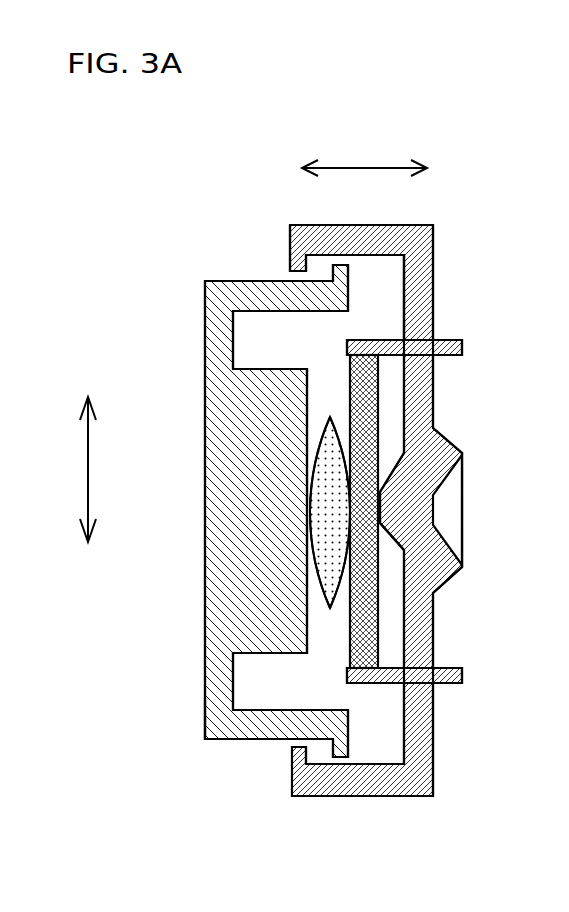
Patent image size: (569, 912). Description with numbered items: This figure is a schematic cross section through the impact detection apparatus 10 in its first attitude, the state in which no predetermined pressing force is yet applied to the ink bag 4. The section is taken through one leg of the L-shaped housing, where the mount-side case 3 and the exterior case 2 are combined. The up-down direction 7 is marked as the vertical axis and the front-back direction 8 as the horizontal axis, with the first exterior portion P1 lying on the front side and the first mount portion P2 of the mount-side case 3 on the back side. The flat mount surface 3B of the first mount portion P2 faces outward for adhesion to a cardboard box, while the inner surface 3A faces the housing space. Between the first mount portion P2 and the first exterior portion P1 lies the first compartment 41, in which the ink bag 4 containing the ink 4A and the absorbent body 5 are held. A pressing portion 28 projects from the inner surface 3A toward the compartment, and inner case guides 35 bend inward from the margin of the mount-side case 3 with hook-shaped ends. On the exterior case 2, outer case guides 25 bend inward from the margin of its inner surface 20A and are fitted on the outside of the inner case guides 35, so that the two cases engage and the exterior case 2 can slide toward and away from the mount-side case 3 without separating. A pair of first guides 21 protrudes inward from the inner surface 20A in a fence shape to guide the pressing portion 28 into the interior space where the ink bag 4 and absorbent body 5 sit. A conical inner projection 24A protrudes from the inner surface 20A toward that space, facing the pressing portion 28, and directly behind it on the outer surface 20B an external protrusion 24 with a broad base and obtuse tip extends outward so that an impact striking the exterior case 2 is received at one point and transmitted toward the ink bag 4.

The exterior case 2 is at (478, 229).
The mount-side case 3 is at (164, 250).
The inner surface of the mount-side case 3A is at (248, 342).
The mount surface 3B is at (205, 302).
The ink bag 4 is at (317, 543).
The ink 4A is at (330, 503).
The absorbent body 5 is at (330, 606).
The up-down direction 7 is at (88, 478).
The front-back direction 8 is at (365, 170).
The impact detection apparatus 10 is at (247, 221).
The inner surface of the exterior case 20A is at (396, 305).
The outer surface of the exterior case 20B is at (433, 326).
The first guide 21 is at (385, 358).
The external protrusion 24 is at (462, 568).
The inner projection 24A is at (388, 486).
The outer case guide 25 is at (306, 256).
The pressing portion 28 is at (263, 653).
The inner case guide 35 is at (333, 270).
The first compartment 41 is at (308, 411).
The first exterior portion P1 is at (433, 628).
The first mount portion P2 is at (205, 718).